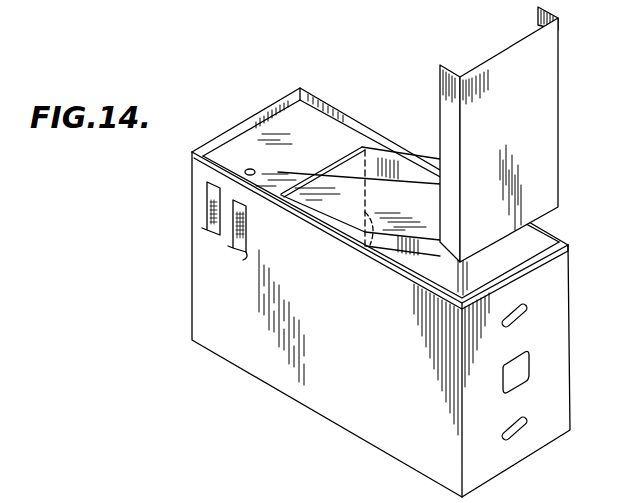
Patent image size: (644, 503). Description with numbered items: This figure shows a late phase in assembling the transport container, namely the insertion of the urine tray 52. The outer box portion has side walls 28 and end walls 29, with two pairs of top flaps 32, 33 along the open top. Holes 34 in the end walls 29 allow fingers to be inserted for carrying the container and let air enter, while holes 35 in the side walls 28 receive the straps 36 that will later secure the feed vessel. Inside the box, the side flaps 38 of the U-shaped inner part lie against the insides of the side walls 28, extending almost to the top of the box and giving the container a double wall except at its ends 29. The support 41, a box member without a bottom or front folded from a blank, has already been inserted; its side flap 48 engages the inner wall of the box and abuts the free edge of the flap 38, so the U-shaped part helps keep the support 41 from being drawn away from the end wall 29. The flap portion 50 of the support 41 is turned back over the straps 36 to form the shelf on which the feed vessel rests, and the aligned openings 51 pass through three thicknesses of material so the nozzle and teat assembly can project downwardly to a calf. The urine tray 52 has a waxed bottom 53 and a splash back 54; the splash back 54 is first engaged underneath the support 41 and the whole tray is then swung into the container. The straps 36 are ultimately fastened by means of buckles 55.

The side walls 28 is at (356, 420).
The end walls 29 is at (550, 278).
The top flaps 32 is at (523, 238).
The top flaps 33 is at (262, 118).
The holes 34 is at (527, 418).
The holes 35 is at (244, 206).
The straps 36 is at (247, 230).
The side flaps 38 is at (457, 283).
The support 41 is at (328, 155).
The side flap 48 is at (368, 246).
The flap portion 50 is at (334, 142).
The openings 51 is at (228, 157).
The urine tray 52 is at (561, 137).
The waxed bottom 53 is at (545, 61).
The splash back 54 is at (392, 188).
The buckles 55 is at (248, 256).